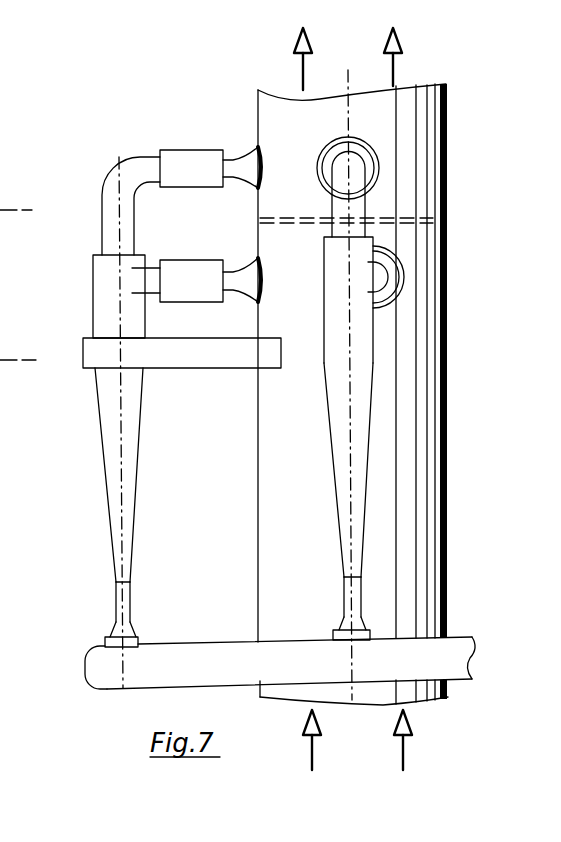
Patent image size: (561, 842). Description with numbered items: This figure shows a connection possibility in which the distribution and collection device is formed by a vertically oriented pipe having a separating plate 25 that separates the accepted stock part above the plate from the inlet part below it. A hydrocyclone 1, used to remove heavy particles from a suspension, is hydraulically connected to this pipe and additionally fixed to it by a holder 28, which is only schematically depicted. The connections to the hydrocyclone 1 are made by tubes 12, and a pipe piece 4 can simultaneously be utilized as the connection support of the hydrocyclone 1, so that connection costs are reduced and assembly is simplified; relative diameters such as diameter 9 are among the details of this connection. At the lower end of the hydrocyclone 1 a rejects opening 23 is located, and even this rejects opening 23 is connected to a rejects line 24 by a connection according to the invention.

The hydrocyclone 1 is at (93, 410).
The pipe piece 4 is at (243, 157).
The diameter 9 is at (148, 277).
The tube 12 is at (193, 168).
The rejects opening 23 is at (347, 562).
The rejects line 24 is at (173, 668).
The separating plate 25 is at (410, 220).
The holder 28 is at (215, 352).